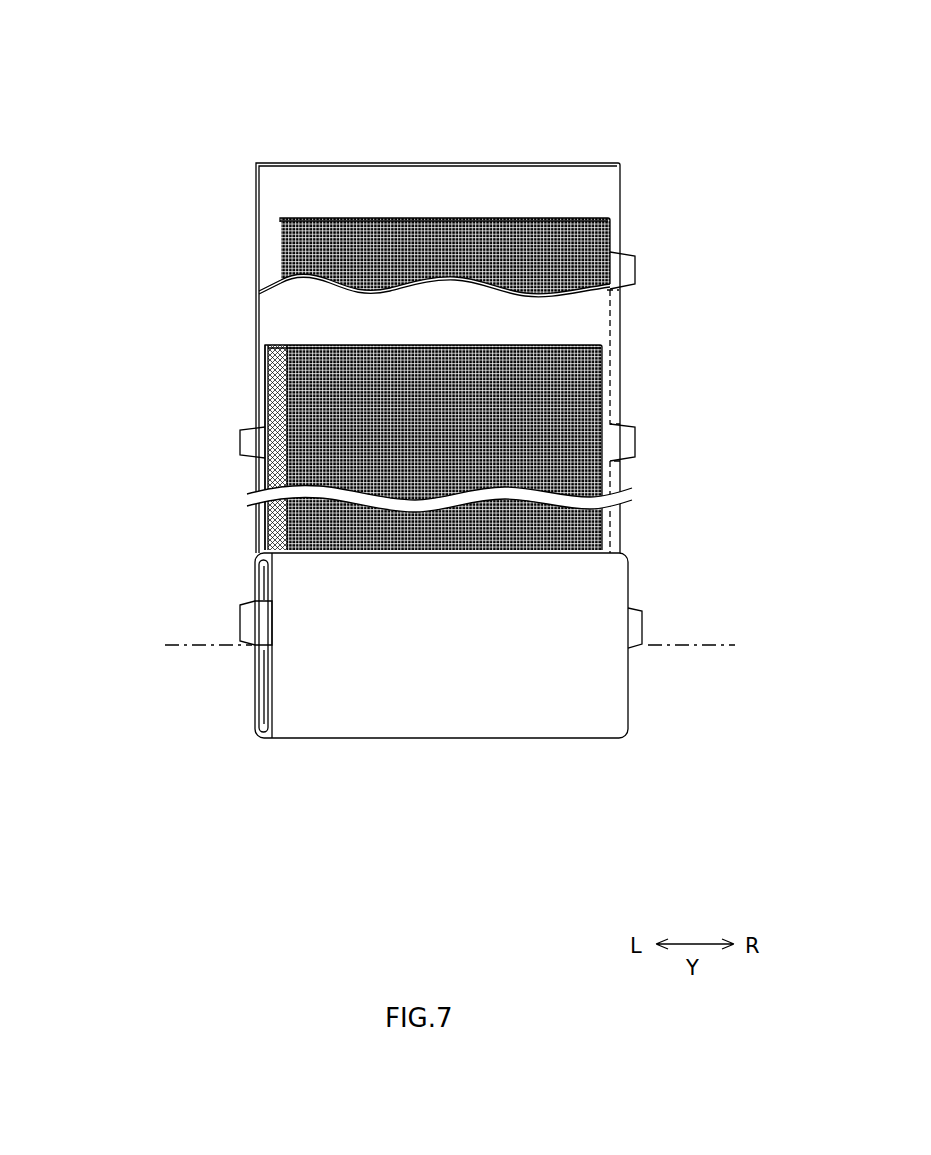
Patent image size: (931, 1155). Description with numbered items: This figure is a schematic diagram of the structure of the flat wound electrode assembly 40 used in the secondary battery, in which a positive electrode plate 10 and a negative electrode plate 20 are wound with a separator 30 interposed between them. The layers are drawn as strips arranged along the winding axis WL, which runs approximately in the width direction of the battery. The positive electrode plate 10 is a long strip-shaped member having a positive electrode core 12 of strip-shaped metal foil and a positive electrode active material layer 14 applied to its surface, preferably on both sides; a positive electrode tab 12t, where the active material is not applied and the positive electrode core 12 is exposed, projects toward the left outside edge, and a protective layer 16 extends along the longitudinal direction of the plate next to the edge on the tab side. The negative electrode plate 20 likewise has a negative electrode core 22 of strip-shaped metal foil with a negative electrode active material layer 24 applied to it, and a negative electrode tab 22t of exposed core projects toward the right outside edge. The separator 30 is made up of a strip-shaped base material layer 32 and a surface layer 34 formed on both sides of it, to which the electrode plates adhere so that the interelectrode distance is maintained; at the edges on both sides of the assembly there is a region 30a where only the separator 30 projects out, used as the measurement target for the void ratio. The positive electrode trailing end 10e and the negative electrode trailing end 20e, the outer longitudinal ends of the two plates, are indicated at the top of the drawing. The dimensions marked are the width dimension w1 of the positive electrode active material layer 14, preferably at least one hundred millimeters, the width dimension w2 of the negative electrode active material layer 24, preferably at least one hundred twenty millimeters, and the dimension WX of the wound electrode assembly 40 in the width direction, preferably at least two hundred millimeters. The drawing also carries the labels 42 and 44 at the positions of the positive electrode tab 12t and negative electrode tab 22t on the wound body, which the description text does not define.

The wound electrode assembly 40 is at (192, 76).
The positive electrode plate 10 is at (138, 383).
The positive electrode trailing end 10e is at (478, 345).
The positive electrode core 12 is at (265, 480).
The positive electrode tab 12t is at (243, 446).
The positive electrode active material layer 14 is at (320, 405).
The protective layer 16 is at (275, 362).
The negative electrode plate 20 is at (742, 266).
The negative electrode trailing end 20e is at (365, 218).
The negative electrode core 22 is at (612, 360).
The negative electrode tab 22t is at (633, 271).
The negative electrode active material layer 24 is at (610, 240).
The separator 30 is at (420, 358).
The base material layer 32 is at (268, 187).
The surface layer 34 is at (285, 308).
The region where only the separator projects out 30a is at (262, 335).
The negative electrode tab group 42 is at (240, 620).
The positive electrode tab group 44 is at (645, 627).
The winding axis WL is at (705, 636).
The width dimension of the positive electrode active material layer w1 is at (287, 553).
The width dimension of the negative electrode active material layer w2 is at (607, 218).
The dimension in the width direction of the wound electrode assembly WX is at (271, 745).